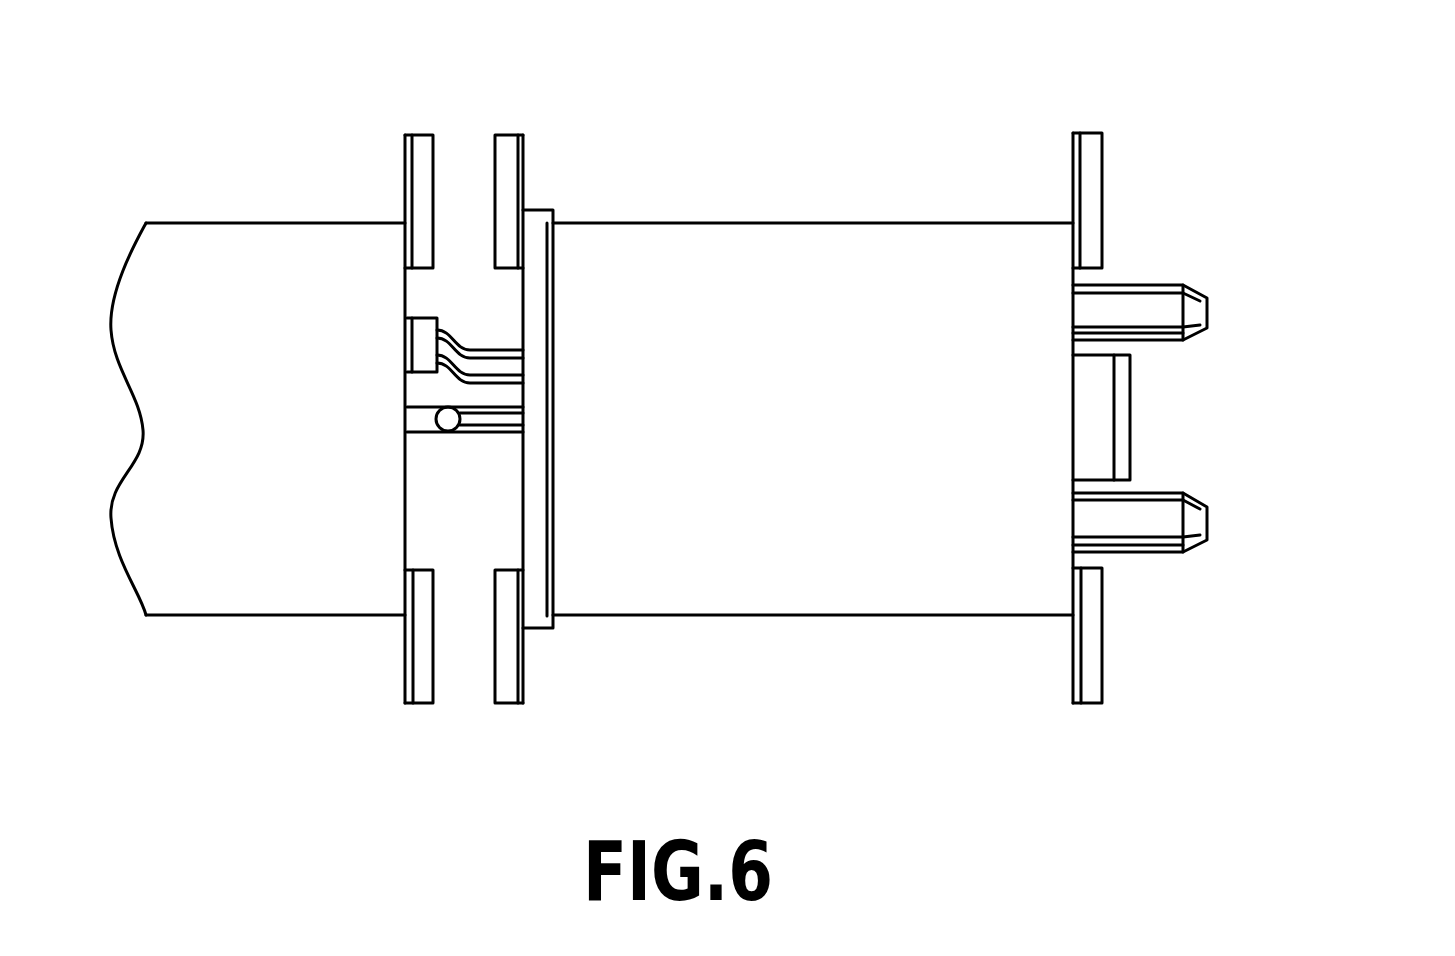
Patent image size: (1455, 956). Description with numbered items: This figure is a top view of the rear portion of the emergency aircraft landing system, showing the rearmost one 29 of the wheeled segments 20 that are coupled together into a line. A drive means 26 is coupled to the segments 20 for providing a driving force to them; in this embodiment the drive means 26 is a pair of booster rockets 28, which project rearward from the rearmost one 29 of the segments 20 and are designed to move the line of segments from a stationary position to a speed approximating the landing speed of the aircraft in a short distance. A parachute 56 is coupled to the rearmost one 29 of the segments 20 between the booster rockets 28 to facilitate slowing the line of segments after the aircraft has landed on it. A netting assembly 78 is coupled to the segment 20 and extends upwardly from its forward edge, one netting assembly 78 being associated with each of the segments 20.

The wheeled segment 20 is at (262, 259).
The drive means 26 is at (1235, 267).
The booster rockets 28 is at (1140, 293).
The rearmost one of the segments 29 is at (880, 223).
The parachute 56 is at (1097, 427).
The netting assembly 78 is at (555, 313).